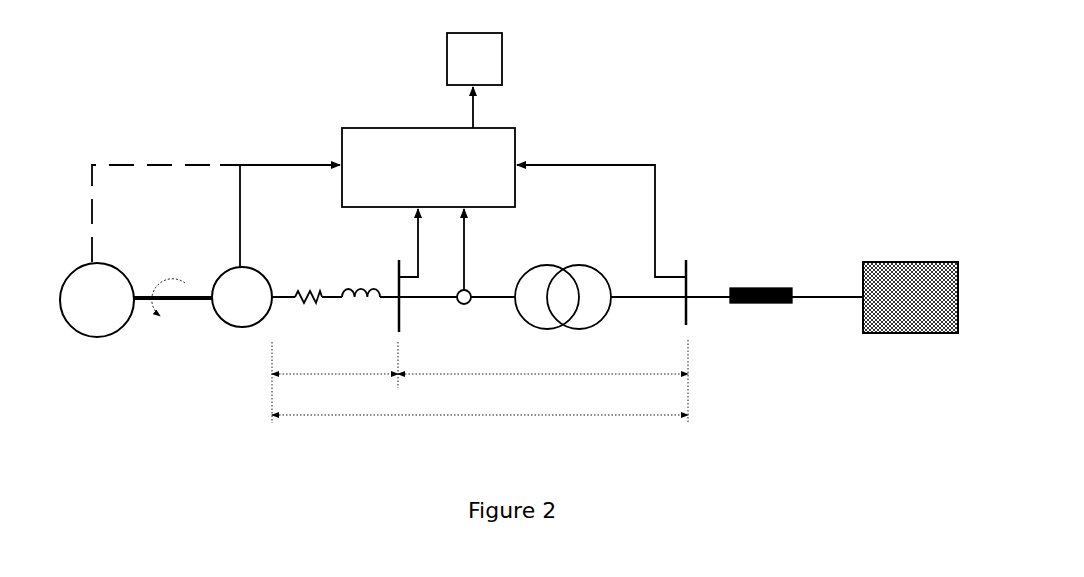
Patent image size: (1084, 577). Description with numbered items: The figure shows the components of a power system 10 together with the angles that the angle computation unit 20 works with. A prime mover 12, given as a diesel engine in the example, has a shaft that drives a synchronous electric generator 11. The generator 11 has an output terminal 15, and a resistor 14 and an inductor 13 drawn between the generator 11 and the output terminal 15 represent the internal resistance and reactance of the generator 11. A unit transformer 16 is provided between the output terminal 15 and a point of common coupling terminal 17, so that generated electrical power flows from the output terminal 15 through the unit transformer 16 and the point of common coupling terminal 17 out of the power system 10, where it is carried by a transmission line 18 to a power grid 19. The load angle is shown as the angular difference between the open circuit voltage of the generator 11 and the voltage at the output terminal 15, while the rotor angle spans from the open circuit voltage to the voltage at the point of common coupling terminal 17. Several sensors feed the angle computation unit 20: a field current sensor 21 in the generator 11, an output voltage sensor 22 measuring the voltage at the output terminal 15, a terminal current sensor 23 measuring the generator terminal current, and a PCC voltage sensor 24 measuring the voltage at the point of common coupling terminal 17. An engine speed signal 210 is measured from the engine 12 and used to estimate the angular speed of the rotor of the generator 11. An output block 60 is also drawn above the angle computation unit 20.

The power system 10 is at (833, 115).
The synchronous electric generator 11 is at (253, 340).
The prime mover 12 is at (62, 260).
The inductor 13 is at (348, 282).
The resistor 14 is at (303, 287).
The output terminal 15 is at (402, 307).
The unit transformer 16 is at (570, 260).
The point of common coupling terminal 17 is at (692, 308).
The transmission line 18 is at (752, 283).
The power grid 19 is at (895, 258).
The angle computation unit 20 is at (422, 127).
The field current sensor 21 is at (280, 196).
The output voltage sensor 22 is at (415, 253).
The terminal current sensor 23 is at (467, 255).
The PCC voltage sensor 24 is at (552, 162).
The output unit 60 is at (505, 62).
The engine speed signal 210 is at (165, 163).